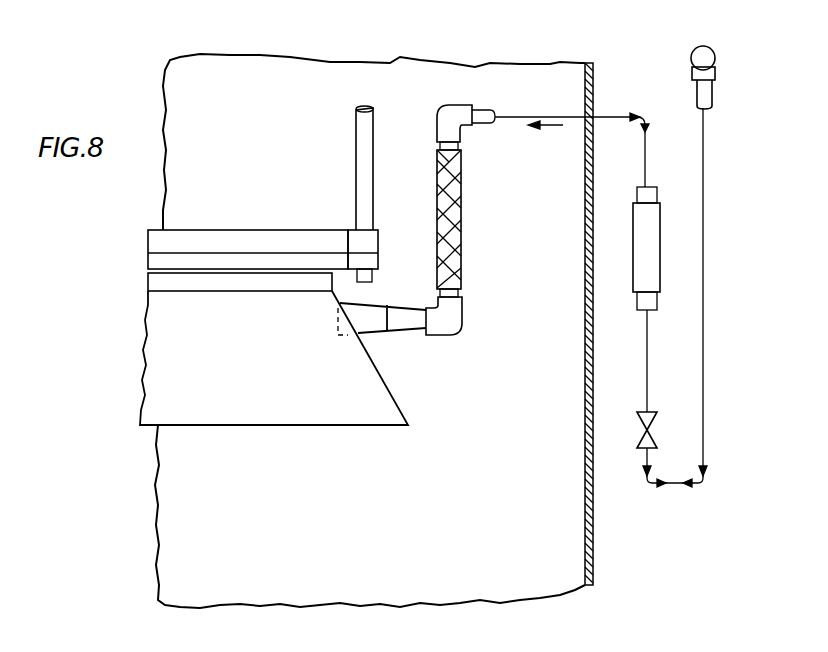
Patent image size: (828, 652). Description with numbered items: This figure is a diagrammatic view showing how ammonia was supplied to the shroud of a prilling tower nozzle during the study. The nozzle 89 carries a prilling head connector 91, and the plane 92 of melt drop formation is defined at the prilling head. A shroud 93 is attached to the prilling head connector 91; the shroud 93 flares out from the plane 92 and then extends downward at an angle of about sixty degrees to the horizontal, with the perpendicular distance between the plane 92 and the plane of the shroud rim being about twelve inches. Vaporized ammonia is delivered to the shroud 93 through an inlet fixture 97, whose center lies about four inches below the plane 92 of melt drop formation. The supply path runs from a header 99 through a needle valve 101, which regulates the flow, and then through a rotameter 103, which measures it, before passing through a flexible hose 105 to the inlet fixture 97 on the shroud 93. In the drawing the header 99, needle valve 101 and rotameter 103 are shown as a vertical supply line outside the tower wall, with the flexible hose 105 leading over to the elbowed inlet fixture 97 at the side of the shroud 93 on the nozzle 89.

The nozzle 89 is at (170, 516).
The prilling head connector 91 is at (190, 229).
The plane of melt drop formation 92 is at (258, 267).
The shroud 93 is at (297, 422).
The inlet fixture 97 is at (377, 312).
The header 99 is at (696, 56).
The needle valve 101 is at (642, 447).
The rotameter 103 is at (638, 280).
The flexible hose 105 is at (450, 177).